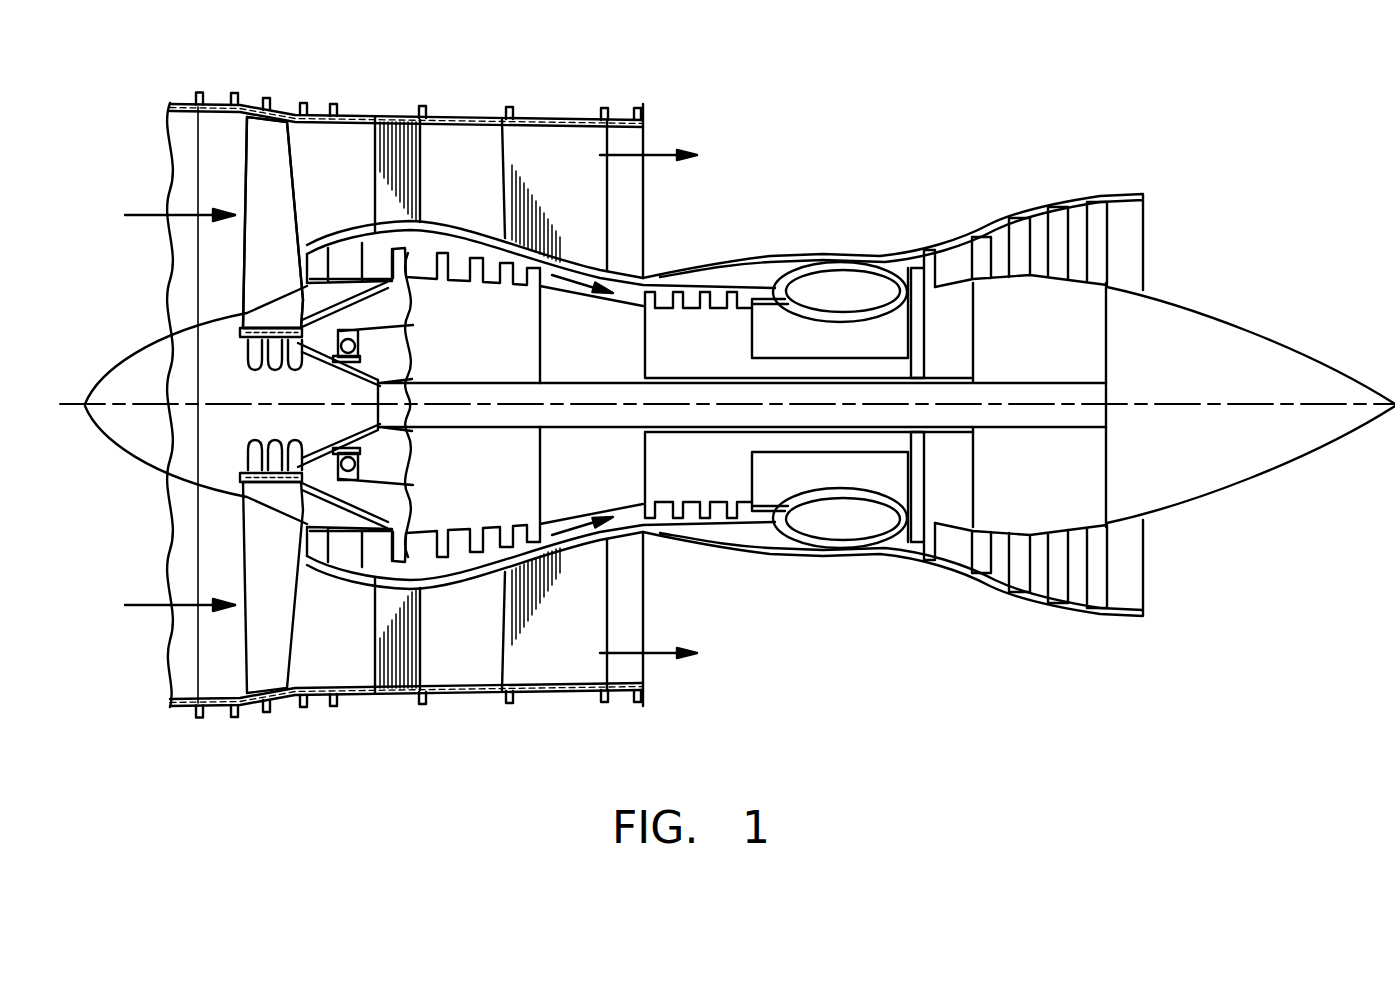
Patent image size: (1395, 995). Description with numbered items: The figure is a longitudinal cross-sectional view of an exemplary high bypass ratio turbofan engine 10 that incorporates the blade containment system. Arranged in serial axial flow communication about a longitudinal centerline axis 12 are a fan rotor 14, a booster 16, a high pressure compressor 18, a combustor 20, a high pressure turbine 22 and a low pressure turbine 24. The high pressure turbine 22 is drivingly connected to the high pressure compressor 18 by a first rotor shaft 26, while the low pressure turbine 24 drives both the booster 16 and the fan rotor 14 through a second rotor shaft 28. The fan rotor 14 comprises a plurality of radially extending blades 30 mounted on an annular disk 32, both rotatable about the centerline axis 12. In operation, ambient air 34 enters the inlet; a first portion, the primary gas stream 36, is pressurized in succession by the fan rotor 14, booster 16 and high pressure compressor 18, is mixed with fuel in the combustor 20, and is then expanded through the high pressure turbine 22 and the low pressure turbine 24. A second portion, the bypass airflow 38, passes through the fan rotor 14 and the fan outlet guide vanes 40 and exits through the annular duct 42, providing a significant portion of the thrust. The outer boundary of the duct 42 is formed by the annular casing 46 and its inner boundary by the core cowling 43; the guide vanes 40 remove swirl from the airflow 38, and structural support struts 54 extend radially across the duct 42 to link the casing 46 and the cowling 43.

The high bypass ratio turbofan engine 10 is at (805, 227).
The longitudinal centerline axis 12 is at (1195, 390).
The fan rotor 14 is at (290, 143).
The booster 16 is at (410, 258).
The high pressure compressor 18 is at (670, 292).
The combustor 20 is at (842, 527).
The high pressure turbine 22 is at (921, 268).
The low pressure turbine 24 is at (1018, 222).
The first rotor shaft 26 is at (906, 341).
The second rotor shaft 28 is at (975, 357).
The blades 30 is at (283, 177).
The annular disk 32 is at (240, 338).
The ambient air 34 is at (150, 213).
The primary gas stream 36 is at (572, 280).
The bypass airflow 38 is at (657, 152).
The fan outlet guide vanes 40 is at (413, 143).
The annular duct 42 is at (630, 197).
The core cowling 43 is at (428, 227).
The annular casing 46 is at (356, 92).
The structural support struts 54 is at (553, 137).